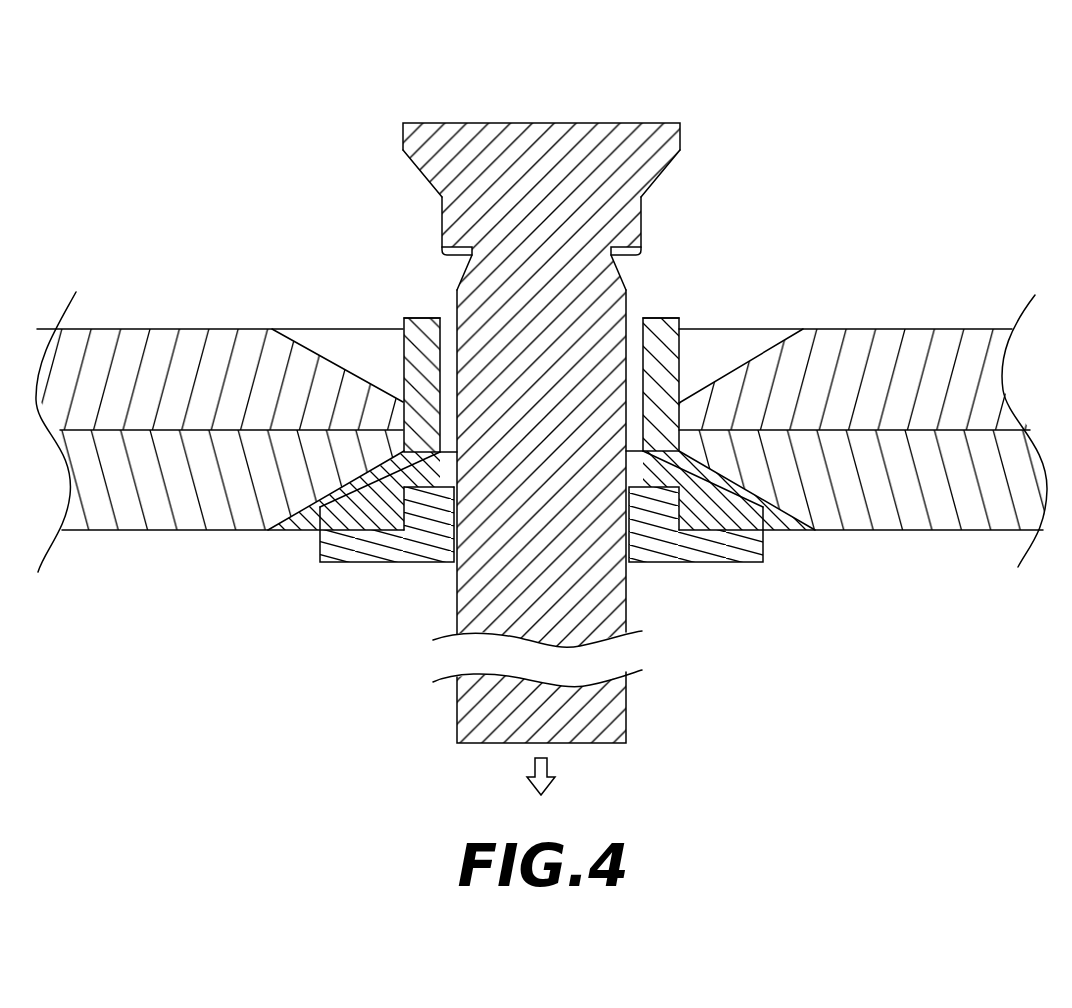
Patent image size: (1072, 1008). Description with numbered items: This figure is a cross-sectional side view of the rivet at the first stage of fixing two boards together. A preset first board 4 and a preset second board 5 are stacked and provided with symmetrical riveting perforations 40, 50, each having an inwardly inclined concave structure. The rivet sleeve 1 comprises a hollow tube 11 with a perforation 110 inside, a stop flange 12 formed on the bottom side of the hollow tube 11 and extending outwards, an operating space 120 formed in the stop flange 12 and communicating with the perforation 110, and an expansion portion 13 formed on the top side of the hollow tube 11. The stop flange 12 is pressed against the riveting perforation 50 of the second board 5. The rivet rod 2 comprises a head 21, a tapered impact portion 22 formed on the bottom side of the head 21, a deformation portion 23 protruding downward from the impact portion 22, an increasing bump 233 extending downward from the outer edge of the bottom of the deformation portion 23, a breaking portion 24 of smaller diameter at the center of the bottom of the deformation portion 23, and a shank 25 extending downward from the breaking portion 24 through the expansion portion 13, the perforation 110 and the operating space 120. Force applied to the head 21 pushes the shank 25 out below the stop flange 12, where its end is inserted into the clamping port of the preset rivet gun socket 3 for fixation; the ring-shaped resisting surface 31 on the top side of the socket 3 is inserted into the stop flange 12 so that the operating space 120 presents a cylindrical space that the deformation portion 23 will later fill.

The rivet sleeve 1 is at (501, 409).
The hollow tube 11 is at (403, 370).
The stop flange 12 is at (327, 513).
The expansion portion 13 is at (405, 320).
The perforation 110 is at (641, 310).
The operating space 120 is at (440, 475).
The rivet rod 2 is at (536, 388).
The head 21 is at (544, 123).
The tapered impact portion 22 is at (658, 176).
The deformation portion 23 is at (640, 227).
The increasing bump 233 is at (640, 254).
The breaking portion 24 is at (478, 278).
The shank 25 is at (583, 727).
The preset rivet gun socket 3 is at (728, 548).
The resisting surface 31 is at (641, 478).
The first board 4 is at (940, 348).
The riveting perforation 40 is at (740, 345).
The second board 5 is at (940, 510).
The riveting perforation 50 is at (781, 530).